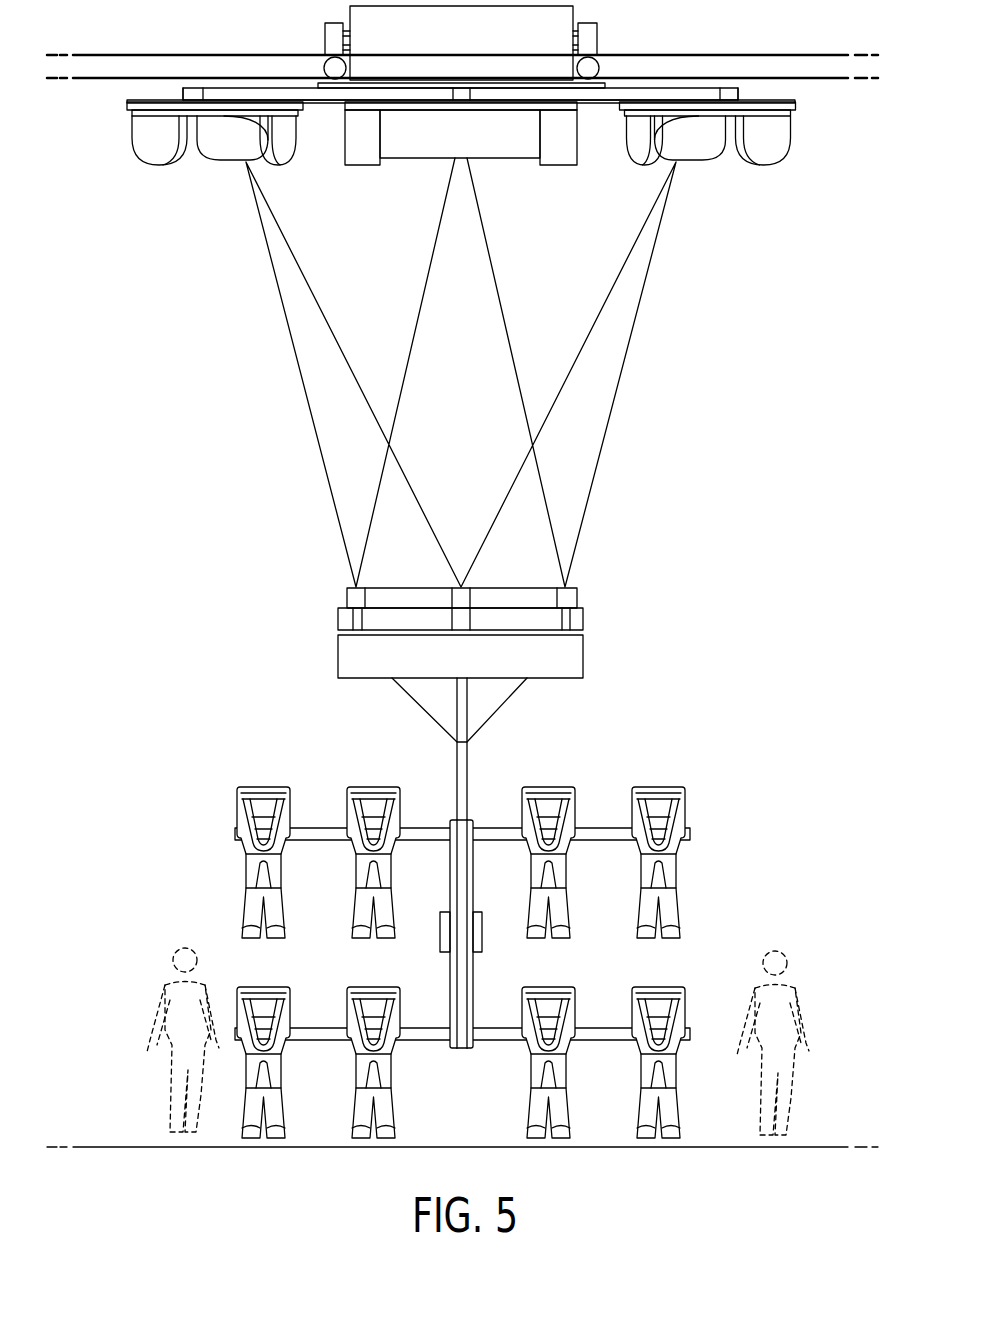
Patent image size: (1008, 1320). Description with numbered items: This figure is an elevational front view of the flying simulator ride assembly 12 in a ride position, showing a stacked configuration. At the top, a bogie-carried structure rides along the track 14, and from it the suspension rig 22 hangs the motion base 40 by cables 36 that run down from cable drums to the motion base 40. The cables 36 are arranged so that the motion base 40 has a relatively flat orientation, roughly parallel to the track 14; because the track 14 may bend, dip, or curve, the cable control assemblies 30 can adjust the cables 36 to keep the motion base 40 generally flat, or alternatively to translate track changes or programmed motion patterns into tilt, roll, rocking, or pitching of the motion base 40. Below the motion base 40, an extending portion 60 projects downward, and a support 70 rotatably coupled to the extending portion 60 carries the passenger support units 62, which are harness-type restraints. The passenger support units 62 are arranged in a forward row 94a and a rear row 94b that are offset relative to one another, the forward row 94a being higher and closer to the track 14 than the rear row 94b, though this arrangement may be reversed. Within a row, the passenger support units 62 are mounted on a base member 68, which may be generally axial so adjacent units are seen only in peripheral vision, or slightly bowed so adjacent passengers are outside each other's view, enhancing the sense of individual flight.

The flying simulator ride assembly 12 is at (141, 353).
The track 14 is at (612, 55).
The suspension rig 22 is at (111, 131).
The cable control assemblies 30 is at (783, 162).
The cables 36 is at (296, 362).
The motion base 40 is at (583, 655).
The extending portion 60 is at (456, 760).
The passenger support units 62 is at (243, 868).
The base member 68 is at (600, 828).
The support 70 is at (473, 985).
The forward row 94a is at (209, 805).
The rear row 94b is at (229, 966).